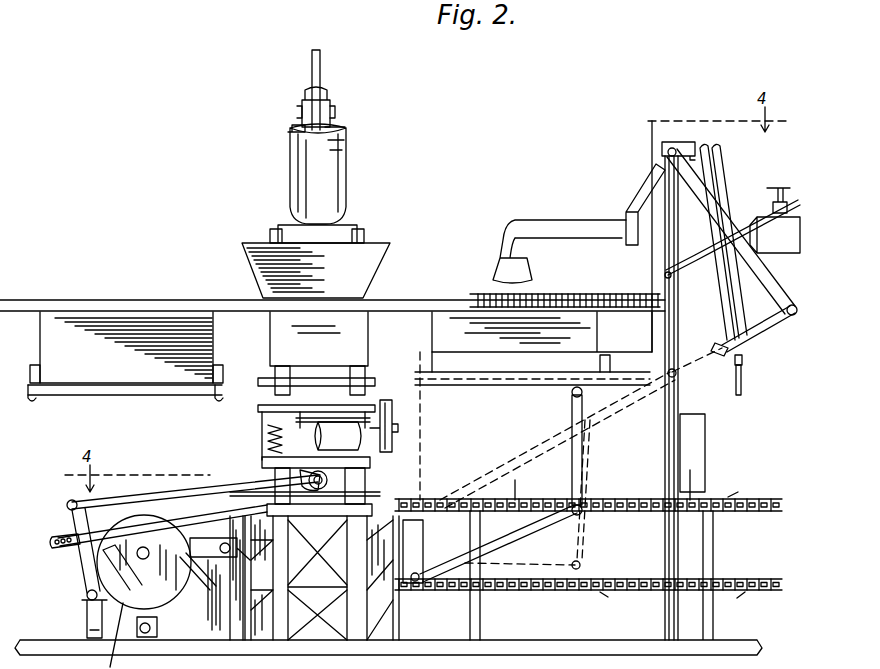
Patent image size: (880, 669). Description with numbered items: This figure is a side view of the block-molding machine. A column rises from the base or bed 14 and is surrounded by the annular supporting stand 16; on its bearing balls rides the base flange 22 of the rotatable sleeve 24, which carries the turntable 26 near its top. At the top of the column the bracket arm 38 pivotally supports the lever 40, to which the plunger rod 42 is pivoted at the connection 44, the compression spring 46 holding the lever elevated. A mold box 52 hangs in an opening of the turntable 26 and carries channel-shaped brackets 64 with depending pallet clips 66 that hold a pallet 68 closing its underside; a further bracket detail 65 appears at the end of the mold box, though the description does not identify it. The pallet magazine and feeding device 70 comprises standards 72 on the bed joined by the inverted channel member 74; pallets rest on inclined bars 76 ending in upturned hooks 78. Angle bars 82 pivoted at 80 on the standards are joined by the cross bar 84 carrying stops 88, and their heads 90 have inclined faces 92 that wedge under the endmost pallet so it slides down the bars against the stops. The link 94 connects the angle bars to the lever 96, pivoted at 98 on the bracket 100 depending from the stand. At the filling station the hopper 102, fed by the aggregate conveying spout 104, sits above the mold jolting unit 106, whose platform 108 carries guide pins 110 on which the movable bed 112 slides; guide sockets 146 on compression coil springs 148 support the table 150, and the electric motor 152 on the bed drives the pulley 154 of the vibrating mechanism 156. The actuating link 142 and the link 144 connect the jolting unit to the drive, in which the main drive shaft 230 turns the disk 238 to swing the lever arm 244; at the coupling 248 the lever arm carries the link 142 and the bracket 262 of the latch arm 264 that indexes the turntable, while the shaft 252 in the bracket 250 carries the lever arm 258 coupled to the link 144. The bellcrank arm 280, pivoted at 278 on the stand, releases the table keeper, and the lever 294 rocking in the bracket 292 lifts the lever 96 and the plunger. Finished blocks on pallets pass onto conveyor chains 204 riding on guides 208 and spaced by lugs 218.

The base or bed 14 is at (585, 640).
The annular supporting stand 16 is at (405, 530).
The base flange 22 is at (400, 500).
The rotatable sleeve 24 is at (298, 235).
The turntable 26 is at (398, 300).
The bracket arm 38 is at (344, 128).
The lever 40 is at (312, 60).
The plunger rod 42 is at (334, 110).
The pivotal connection 44 is at (302, 112).
The compression spring 46 is at (292, 129).
The mold box 52 is at (40, 348).
The channel-shaped bracket 64 is at (216, 365).
The bracket 65 is at (40, 368).
The pallet clip 66 is at (30, 399).
The pallet 68 is at (137, 386).
The pallet magazine and feeding device 70 is at (777, 266).
The standard 72 is at (672, 432).
The inverted channel member 74 is at (680, 146).
The inclined bar 76 is at (790, 325).
The upturned hook 78 is at (716, 345).
The pivot 80 is at (678, 383).
The angle bar 82 is at (500, 382).
The cross bar 84 is at (440, 387).
The stop 88 is at (438, 426).
The head 90 is at (742, 380).
The inclined face 92 is at (742, 358).
The link 94 is at (572, 418).
The lever 96 is at (500, 540).
The pivot 98 is at (415, 583).
The bracket 100 is at (423, 556).
The hopper 102 is at (368, 250).
The aggregate conveying spout 104 is at (332, 183).
The mold jolting unit 106 is at (277, 593).
The platform 108 is at (382, 505).
The guide pin 110 is at (300, 478).
The movable bed 112 is at (372, 463).
The actuating link 142 is at (223, 542).
The link 144 is at (235, 494).
The guide socket 146 is at (266, 418).
The compression coil spring 148 is at (268, 441).
The table 150 is at (316, 324).
The electric motor 152 is at (335, 437).
The drive pulley 154 is at (386, 400).
The vibrating or jolting mechanism 156 is at (312, 411).
The conveyor chain 204 is at (718, 580).
The guide 208 is at (610, 511).
The lug 218 is at (745, 500).
The main drive shaft 230 is at (145, 547).
The disk 238 is at (165, 608).
The lever arm 244 is at (55, 534).
The pivotal coupling 248 is at (70, 503).
The bracket 250 is at (88, 622).
The shaft 252 is at (87, 595).
The lever arm 258 is at (72, 568).
The bracket 262 is at (85, 503).
The pawl or latch arm 264 is at (152, 506).
The pivot 278 is at (559, 662).
The bellcrank arm 280 is at (486, 662).
The bracket 292 is at (233, 618).
The lever 294 is at (210, 590).